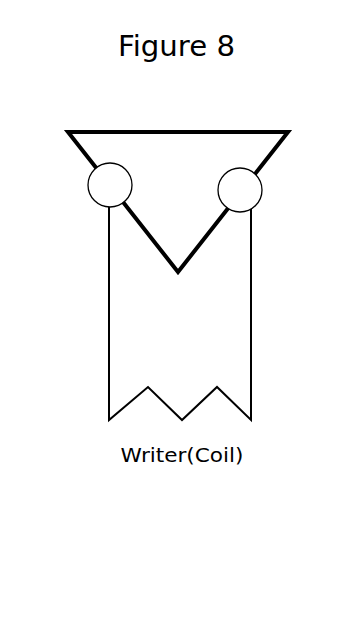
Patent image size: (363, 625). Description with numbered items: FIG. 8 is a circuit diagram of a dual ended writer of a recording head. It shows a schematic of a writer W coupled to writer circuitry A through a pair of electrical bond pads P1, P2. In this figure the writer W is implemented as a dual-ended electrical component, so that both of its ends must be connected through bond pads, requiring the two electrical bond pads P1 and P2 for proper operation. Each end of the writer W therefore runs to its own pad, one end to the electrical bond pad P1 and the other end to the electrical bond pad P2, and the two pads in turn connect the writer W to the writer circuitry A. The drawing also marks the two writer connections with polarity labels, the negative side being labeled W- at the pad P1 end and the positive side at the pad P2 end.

The electrical bond pad P1 is at (110, 185).
The electrical bond pad P2 is at (240, 190).
The writer circuitry A is at (180, 178).
The writer W is at (180, 302).
The writer negative terminal W- is at (58, 201).